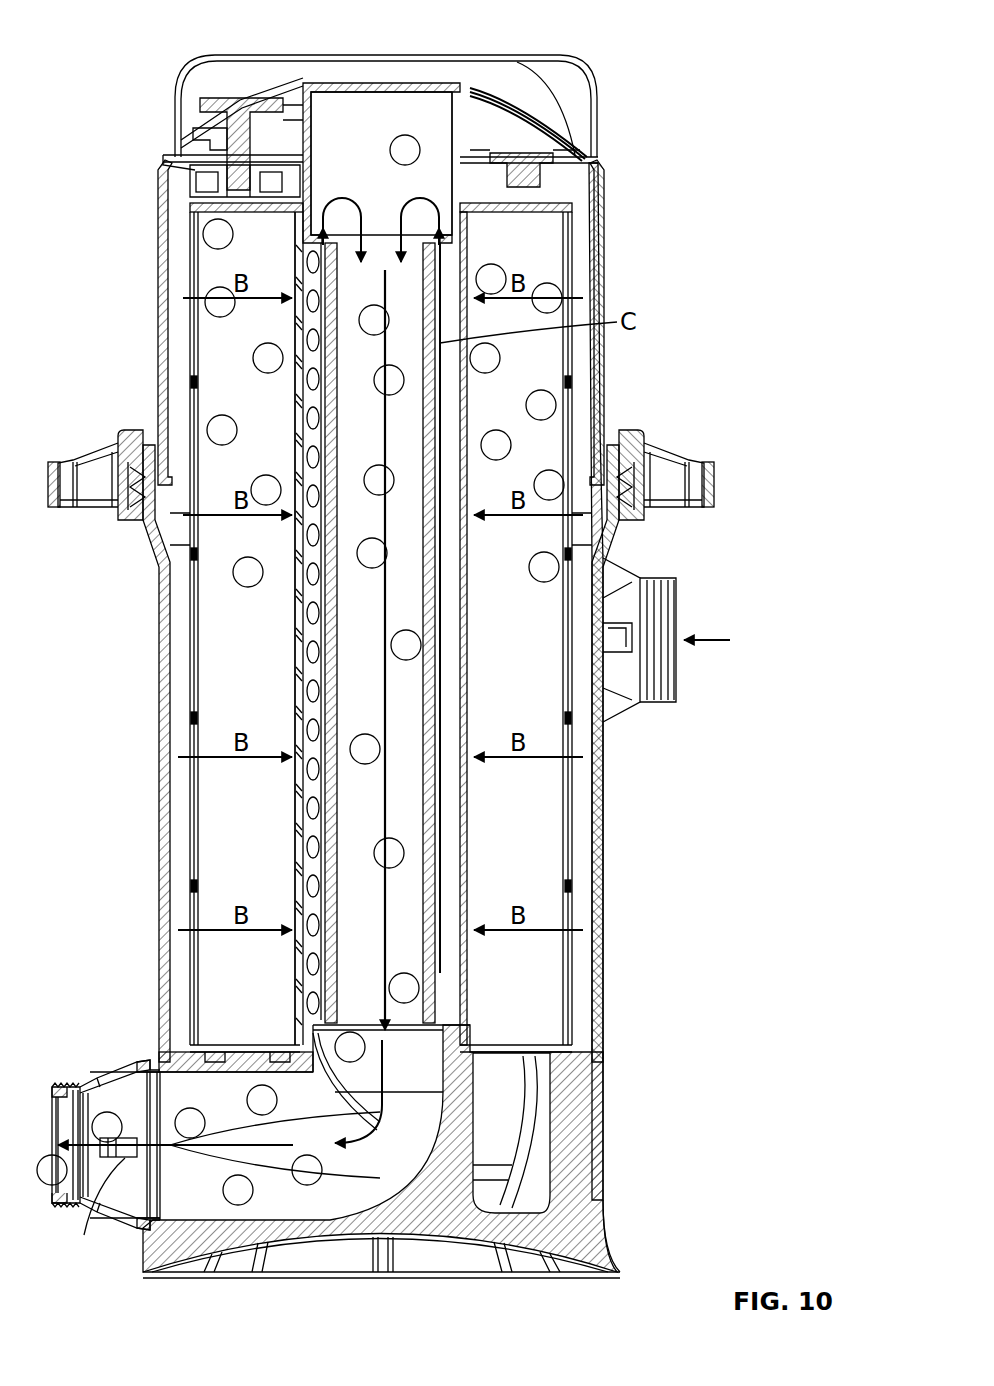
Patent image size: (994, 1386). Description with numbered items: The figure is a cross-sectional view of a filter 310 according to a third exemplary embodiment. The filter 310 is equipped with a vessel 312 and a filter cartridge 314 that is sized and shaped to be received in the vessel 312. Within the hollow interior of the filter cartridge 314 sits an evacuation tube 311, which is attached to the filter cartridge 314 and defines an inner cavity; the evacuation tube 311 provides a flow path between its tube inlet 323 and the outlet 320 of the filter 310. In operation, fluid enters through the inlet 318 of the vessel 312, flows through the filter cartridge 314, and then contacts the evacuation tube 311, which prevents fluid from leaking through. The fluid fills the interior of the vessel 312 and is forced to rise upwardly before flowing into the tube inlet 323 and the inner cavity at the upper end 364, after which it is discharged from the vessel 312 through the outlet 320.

The filter 310 is at (645, 72).
The evacuation tube 311 is at (435, 860).
The vessel 312 is at (150, 752).
The filter cartridge 314 is at (275, 852).
The inlet 318 is at (657, 698).
The outlet 320 is at (67, 1084).
The tube inlet 323 is at (387, 253).
The upper end 364 is at (306, 268).